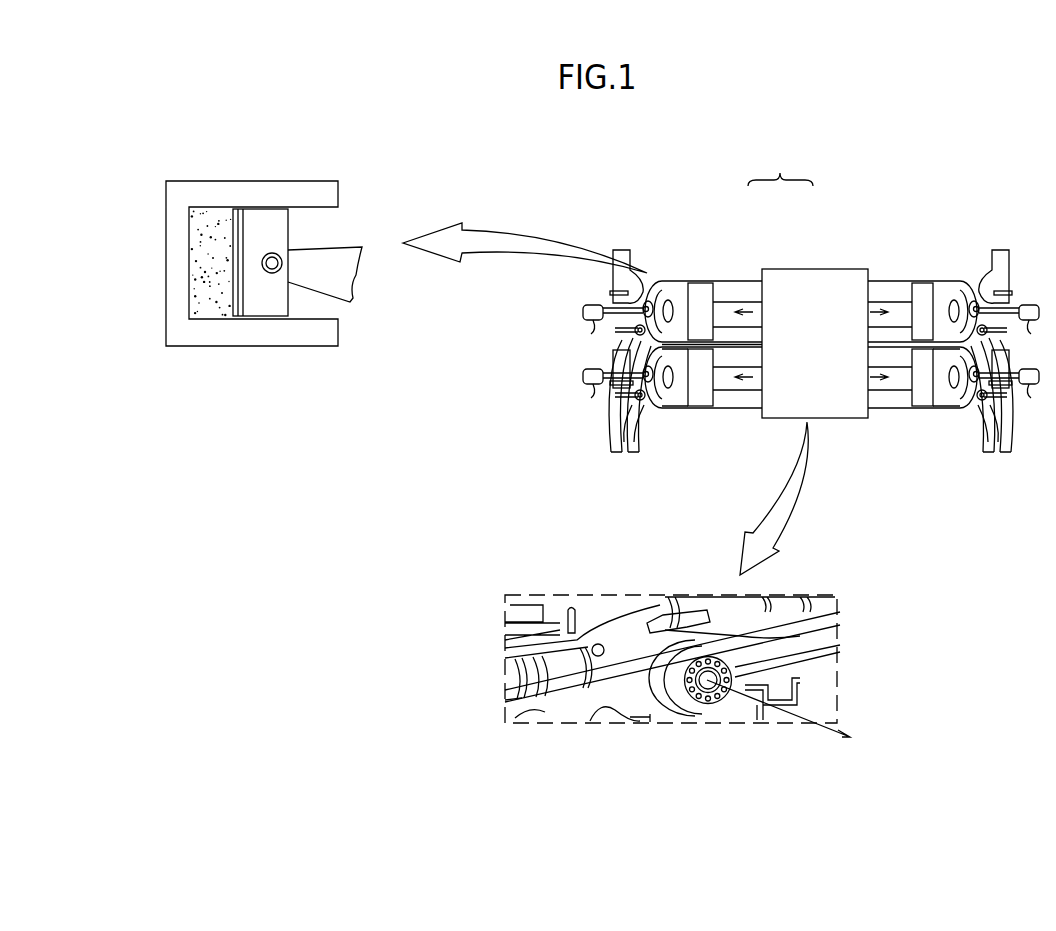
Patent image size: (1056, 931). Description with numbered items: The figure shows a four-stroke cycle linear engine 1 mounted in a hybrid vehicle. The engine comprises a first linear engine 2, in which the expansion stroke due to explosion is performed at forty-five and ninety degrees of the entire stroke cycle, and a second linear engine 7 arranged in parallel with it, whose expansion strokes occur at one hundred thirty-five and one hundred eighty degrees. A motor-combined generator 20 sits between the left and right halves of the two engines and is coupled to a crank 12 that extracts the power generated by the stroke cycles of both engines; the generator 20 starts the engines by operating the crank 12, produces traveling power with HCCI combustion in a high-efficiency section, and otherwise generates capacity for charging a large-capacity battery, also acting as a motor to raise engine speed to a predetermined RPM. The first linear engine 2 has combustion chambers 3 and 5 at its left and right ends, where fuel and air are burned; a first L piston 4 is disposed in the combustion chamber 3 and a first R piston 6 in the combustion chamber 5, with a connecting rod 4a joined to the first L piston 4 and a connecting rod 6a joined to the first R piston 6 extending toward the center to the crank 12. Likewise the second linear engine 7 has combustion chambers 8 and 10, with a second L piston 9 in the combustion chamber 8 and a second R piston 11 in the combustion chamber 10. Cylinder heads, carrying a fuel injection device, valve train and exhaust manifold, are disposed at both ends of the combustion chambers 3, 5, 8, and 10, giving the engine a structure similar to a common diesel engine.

The four-stroke cycle linear engine 1 is at (780, 163).
The first linear engine 2 is at (255, 330).
The combustion chamber 3 is at (215, 228).
The first L piston 4 is at (258, 227).
The connecting rod 4a is at (332, 260).
The combustion chamber 5 is at (942, 287).
The first R piston 6 is at (917, 287).
The connecting rod 6a is at (810, 640).
The second linear engine 7 is at (735, 357).
The combustion chamber 8 is at (683, 402).
The second L piston 9 is at (705, 398).
The combustion chamber 10 is at (943, 400).
The second R piston 11 is at (920, 400).
The crank 12 is at (680, 682).
The motor-combined generator 20 is at (830, 285).